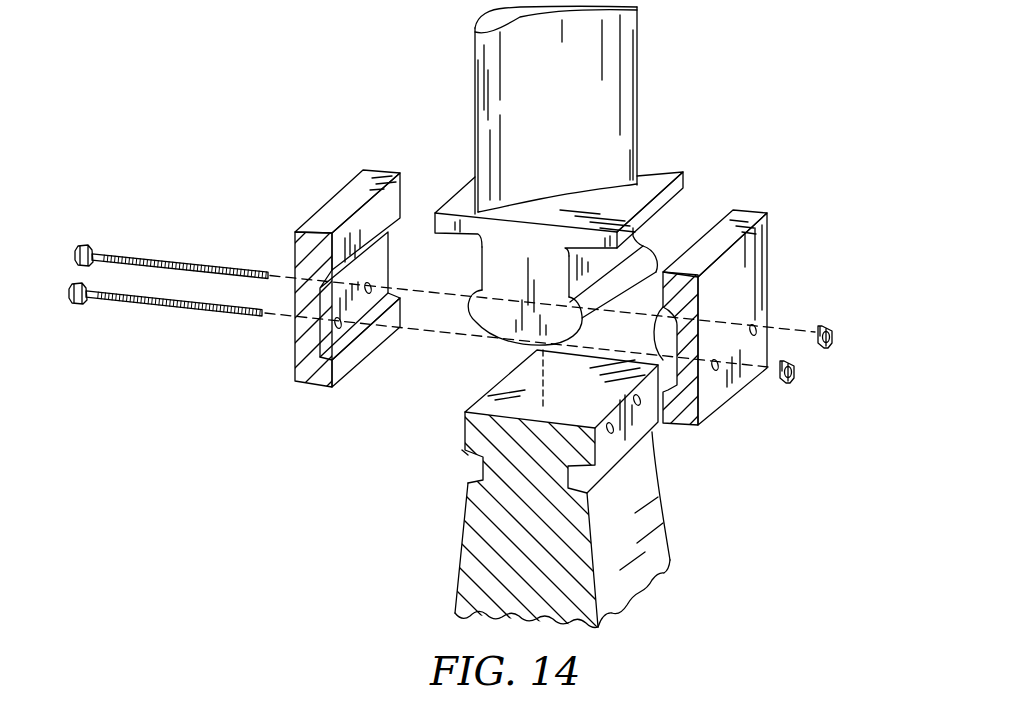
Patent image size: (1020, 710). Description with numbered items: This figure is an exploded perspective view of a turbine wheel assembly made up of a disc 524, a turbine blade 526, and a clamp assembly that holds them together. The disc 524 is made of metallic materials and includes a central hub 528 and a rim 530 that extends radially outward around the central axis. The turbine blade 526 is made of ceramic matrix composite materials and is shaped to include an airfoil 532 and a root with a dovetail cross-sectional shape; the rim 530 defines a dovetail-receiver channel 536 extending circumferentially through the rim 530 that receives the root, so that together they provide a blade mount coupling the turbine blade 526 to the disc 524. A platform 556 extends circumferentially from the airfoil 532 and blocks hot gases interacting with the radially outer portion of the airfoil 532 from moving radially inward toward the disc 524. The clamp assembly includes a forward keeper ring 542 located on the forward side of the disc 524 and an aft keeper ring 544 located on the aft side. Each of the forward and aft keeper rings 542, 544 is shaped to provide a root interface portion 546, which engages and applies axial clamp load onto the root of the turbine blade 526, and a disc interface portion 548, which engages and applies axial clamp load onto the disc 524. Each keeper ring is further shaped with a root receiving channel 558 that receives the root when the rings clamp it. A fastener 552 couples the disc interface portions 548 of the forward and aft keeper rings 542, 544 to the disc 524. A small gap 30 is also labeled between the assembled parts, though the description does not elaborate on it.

The gap 30 is at (466, 440).
The disc 524 is at (440, 540).
The turbine blade 526 is at (648, 97).
The central hub 528 is at (600, 583).
The rim 530 is at (658, 290).
The airfoil 532 is at (608, 62).
The dovetail-receiver channel 536 is at (515, 403).
The forward keeper ring 542 is at (325, 190).
The aft keeper ring 544 is at (778, 243).
The root interface portion 546 is at (406, 197).
The disc interface portion 548 is at (403, 312).
The fastener 552 is at (90, 247).
The platform 556 is at (436, 214).
The root receiving channel 558 is at (318, 297).